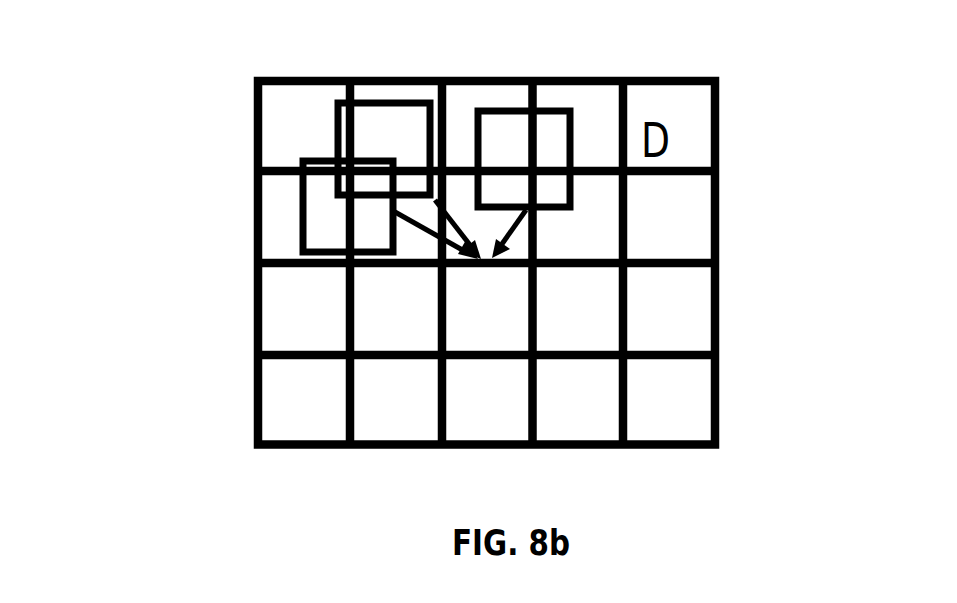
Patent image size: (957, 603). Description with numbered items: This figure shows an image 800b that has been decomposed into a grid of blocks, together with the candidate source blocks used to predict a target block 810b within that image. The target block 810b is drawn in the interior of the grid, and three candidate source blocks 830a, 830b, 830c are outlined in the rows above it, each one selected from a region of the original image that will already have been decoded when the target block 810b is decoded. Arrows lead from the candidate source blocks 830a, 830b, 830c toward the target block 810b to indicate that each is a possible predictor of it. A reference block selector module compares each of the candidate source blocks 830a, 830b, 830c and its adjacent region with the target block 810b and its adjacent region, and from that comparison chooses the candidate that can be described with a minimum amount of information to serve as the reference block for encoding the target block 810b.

The image 800b is at (252, 151).
The target block 810b is at (458, 332).
The candidate source block 830a is at (548, 148).
The candidate source block 830b is at (310, 183).
The candidate source block 830c is at (385, 130).